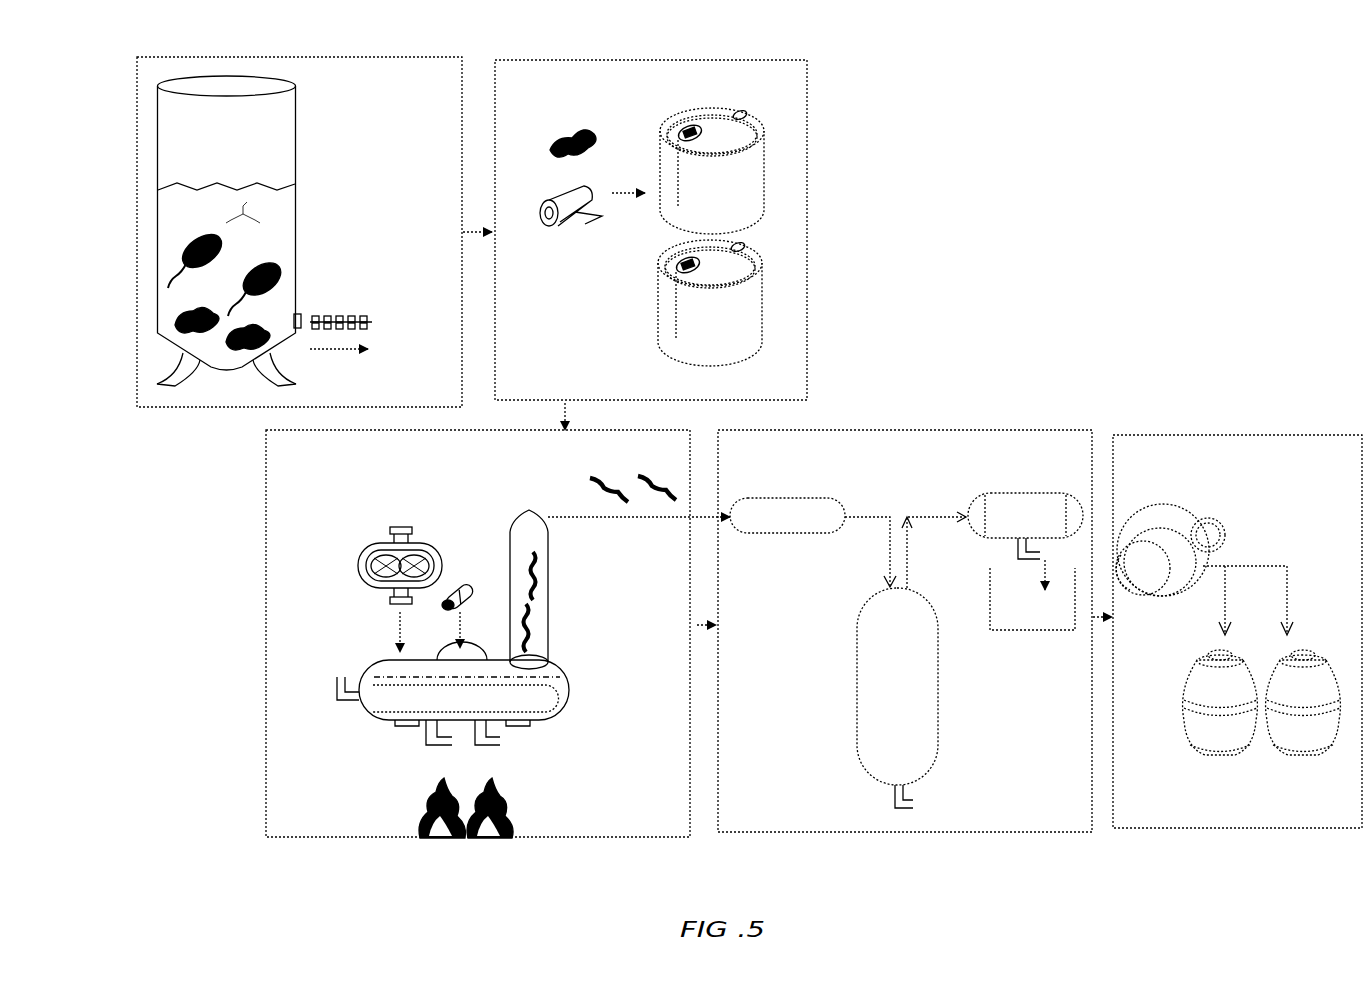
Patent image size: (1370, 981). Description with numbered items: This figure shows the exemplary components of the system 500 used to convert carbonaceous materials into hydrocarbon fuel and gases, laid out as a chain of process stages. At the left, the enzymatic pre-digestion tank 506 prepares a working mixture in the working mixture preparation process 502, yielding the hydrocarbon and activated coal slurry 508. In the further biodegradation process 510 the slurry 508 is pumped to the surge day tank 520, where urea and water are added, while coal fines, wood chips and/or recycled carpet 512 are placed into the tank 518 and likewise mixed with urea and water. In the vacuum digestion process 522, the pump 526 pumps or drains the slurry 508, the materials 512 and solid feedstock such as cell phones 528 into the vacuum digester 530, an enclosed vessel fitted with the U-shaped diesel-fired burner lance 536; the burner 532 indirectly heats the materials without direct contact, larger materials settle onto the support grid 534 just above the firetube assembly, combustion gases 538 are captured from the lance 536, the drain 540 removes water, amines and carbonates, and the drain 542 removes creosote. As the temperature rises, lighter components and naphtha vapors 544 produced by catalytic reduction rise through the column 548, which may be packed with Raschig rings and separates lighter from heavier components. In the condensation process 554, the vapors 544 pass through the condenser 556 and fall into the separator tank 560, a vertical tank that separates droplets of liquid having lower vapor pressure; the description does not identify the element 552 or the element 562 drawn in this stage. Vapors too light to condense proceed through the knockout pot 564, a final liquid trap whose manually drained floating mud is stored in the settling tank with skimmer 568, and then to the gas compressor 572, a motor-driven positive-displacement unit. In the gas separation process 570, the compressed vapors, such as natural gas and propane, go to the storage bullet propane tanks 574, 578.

The system 500 is at (1237, 68).
The working mixture preparation process 502 is at (430, 57).
The enzymatic pre-digestion tank 506 is at (249, 150).
The hydrocarbon and activated coal slurry 508 is at (445, 334).
The further biodegradation process 510 is at (812, 132).
The coal fines, wood chips, and/or recycled carpet 512 is at (595, 114).
The tank 518 is at (739, 204).
The surge day tank 520 is at (730, 347).
The vacuum digestion process 522 is at (366, 726).
The pump 526 is at (400, 571).
The cell phones 528 is at (468, 596).
The vacuum digester 530 is at (482, 669).
The burner 532 is at (525, 807).
The support grid 534 is at (568, 678).
The U-shaped diesel-fired burner lance 536 is at (528, 706).
The combustion gases 538 is at (360, 669).
The drain 540 is at (472, 766).
The drain 542 is at (544, 759).
The naphtha vapors 544 is at (677, 460).
The column 548 is at (553, 496).
The condenser stage 552 is at (782, 548).
The condensation process 554 is at (882, 848).
The condenser 556 is at (799, 527).
The separator tank 560 is at (918, 694).
The vessel drain 562 is at (962, 816).
The knockout pot 564 is at (1052, 526).
The settling tank with skimmer 568 is at (1059, 624).
The gas separation process 570 is at (1247, 842).
The gas compressor 572 is at (1192, 474).
The propane tank 574 is at (1234, 800).
The propane tank 578 is at (1325, 800).